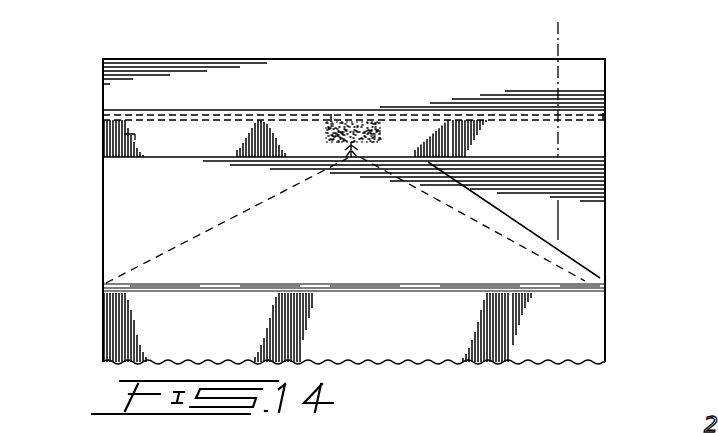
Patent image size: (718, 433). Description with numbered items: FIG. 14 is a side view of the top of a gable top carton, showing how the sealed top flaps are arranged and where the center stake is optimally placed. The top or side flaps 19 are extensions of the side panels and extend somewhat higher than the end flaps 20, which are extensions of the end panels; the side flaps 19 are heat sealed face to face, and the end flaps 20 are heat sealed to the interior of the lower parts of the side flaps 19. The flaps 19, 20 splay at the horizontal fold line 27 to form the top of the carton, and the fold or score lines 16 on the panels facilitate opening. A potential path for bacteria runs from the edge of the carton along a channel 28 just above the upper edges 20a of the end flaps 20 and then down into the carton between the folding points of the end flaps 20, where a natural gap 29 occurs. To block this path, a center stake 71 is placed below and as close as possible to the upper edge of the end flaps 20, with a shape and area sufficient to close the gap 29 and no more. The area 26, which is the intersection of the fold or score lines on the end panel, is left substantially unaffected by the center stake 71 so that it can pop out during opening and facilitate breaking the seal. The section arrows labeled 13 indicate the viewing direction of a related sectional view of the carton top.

The bottom closure 13 is at (519, 32).
The fold or score lines 16 is at (512, 222).
The top or side flaps 19 is at (170, 72).
The end flaps 20 is at (124, 135).
The upper edges of end flaps 20a is at (578, 118).
The area at intersection of fold or score lines 26 is at (351, 158).
The horizontal fold line 27 is at (120, 158).
The channel 28 is at (605, 117).
The natural gap 29 is at (354, 118).
The center stake 71 is at (333, 118).